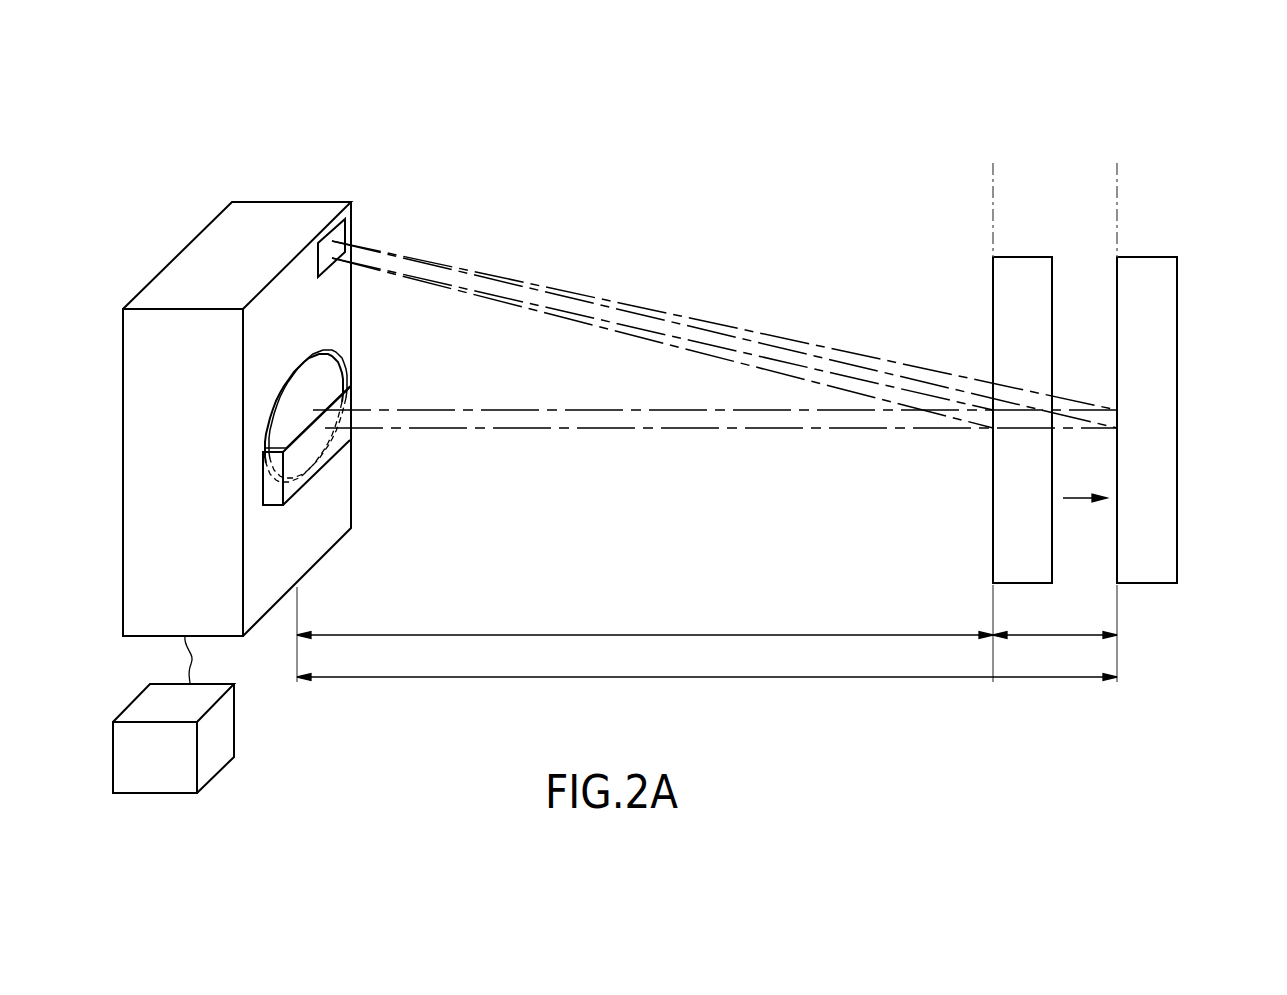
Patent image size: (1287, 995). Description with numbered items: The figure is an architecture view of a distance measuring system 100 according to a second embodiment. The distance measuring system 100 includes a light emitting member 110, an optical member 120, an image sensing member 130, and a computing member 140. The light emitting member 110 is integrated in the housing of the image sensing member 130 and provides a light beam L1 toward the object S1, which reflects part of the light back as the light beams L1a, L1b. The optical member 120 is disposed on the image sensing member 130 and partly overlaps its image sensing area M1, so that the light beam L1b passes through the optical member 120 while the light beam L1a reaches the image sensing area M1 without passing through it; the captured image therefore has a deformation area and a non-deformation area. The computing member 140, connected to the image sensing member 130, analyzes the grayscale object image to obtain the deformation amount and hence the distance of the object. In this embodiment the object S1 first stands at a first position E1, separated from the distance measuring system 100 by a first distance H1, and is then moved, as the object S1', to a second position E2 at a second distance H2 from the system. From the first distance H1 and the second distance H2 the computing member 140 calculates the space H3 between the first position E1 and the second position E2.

The distance measuring system 100 is at (162, 97).
The light emitting member 110 is at (340, 234).
The optical member 120 is at (343, 443).
The image sensing member 130 is at (187, 269).
The computing member 140 is at (225, 729).
The image sensing area M1 is at (342, 366).
The light beam L1 is at (724, 334).
The light beam not passing through the optical member L1a is at (583, 408).
The light beam passing through the optical member L1b is at (595, 432).
The object S1 is at (1031, 386).
The object at the second position S1' is at (1158, 386).
The first position E1 is at (994, 193).
The second position E2 is at (1119, 193).
The first distance H1 is at (645, 619).
The second distance H2 is at (707, 660).
The space H3 is at (1055, 619).